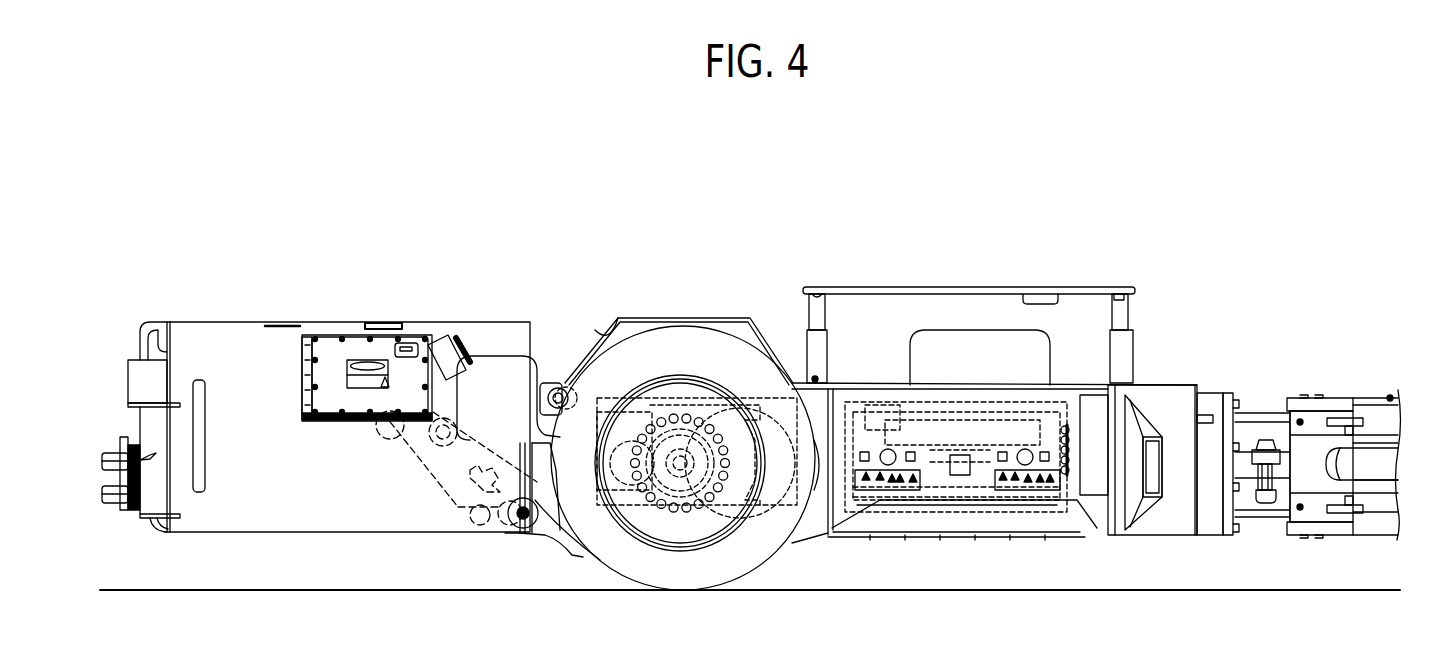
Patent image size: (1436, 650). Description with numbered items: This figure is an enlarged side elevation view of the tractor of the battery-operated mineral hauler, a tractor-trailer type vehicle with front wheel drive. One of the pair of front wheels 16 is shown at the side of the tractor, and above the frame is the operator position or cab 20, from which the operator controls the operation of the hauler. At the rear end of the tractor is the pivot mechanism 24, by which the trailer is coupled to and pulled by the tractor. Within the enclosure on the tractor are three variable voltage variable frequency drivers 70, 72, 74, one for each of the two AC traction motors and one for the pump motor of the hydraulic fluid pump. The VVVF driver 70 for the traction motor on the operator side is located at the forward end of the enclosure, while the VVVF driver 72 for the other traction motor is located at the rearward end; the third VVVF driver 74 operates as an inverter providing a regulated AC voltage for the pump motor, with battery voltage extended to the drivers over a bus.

The front wheel 16 is at (627, 360).
The operator position or cab 20 is at (1085, 310).
The pivot mechanism 24 is at (1255, 440).
The VVVF driver 70 is at (902, 498).
The VVVF driver 72 is at (1033, 497).
The VVVF driver 74 is at (955, 497).